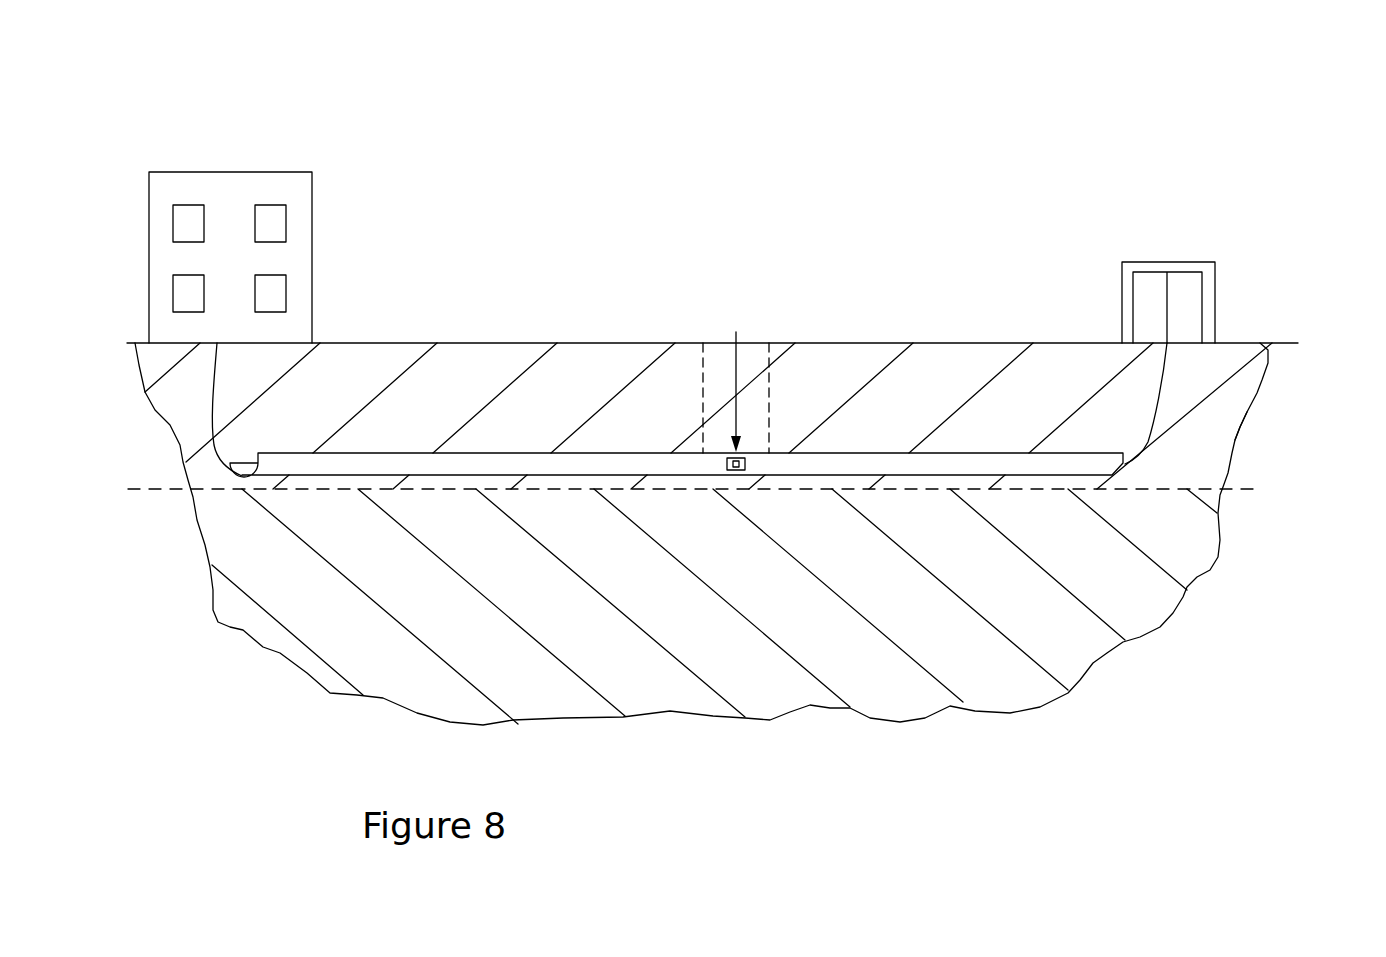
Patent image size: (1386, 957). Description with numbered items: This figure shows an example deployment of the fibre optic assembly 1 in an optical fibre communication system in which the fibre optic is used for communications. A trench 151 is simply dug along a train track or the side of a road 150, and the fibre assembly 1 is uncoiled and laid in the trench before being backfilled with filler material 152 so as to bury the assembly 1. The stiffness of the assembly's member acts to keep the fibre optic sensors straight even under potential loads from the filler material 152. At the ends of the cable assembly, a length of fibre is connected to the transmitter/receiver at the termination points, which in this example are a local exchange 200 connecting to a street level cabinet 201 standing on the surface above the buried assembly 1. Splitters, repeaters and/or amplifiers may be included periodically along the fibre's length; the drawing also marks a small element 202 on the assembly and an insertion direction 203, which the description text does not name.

The fibre optic assembly 1 is at (275, 467).
The road 150 is at (1257, 347).
The trench 151 is at (1170, 467).
The filler material 152 is at (1213, 433).
The local exchange 200 is at (230, 210).
The street level cabinet 201 is at (1180, 272).
The sensor 202 is at (740, 470).
The insertion direction 203 is at (750, 363).